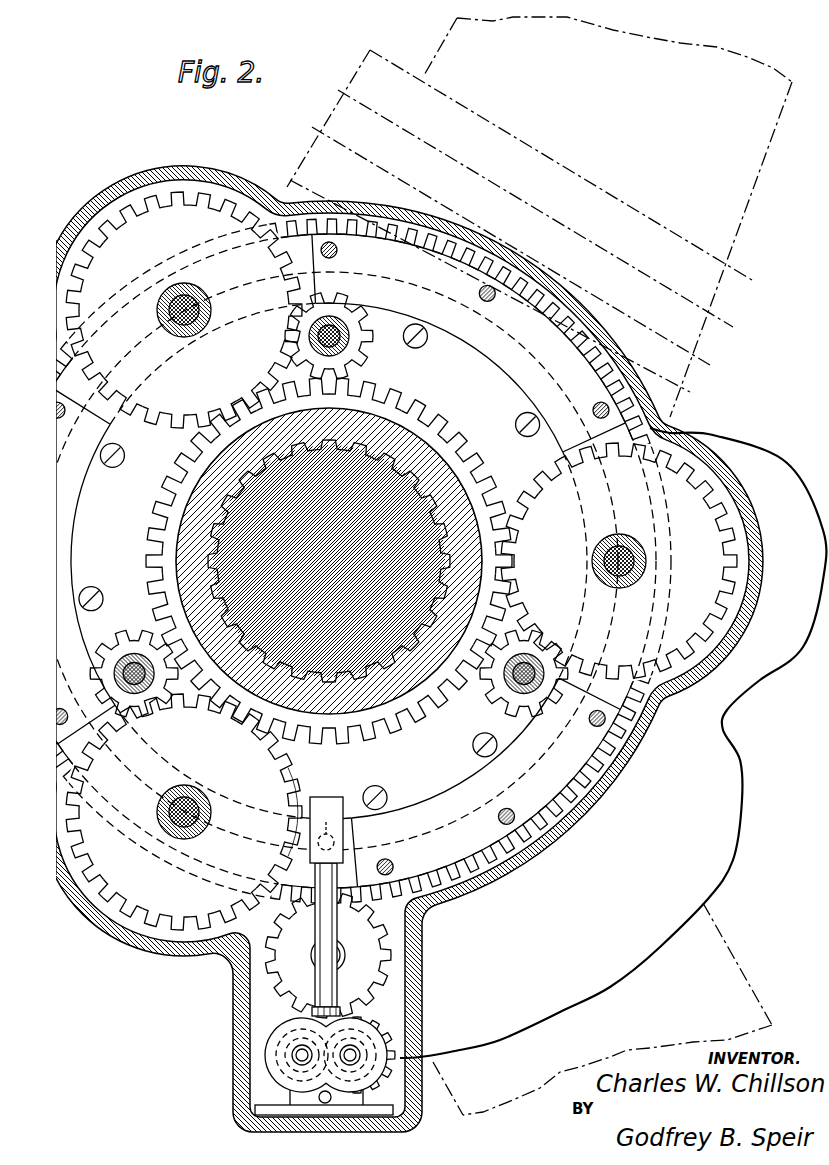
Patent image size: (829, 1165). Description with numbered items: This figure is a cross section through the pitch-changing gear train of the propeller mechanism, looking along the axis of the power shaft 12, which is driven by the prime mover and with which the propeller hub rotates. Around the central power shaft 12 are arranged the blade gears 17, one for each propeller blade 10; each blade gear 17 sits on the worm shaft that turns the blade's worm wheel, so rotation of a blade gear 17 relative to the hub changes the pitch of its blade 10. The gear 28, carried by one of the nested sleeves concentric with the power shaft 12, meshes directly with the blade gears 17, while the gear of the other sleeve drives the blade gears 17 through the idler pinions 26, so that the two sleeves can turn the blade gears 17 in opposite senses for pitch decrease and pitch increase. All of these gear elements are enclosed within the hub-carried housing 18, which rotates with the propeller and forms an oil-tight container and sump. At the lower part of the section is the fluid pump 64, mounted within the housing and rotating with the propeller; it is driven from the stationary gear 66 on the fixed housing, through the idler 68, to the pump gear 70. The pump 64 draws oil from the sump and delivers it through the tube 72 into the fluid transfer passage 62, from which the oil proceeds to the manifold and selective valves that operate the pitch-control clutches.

The propeller blade 10 is at (745, 160).
The power shaft 12 is at (328, 560).
The blade gear 17 is at (169, 426).
The hub-carried housing 18 is at (302, 848).
The idler pinion 26 is at (372, 346).
The gear 28 is at (171, 478).
The fluid transfer passage 62 is at (326, 830).
The fluid pump 64 is at (265, 1053).
The stationary gear 66 is at (458, 887).
The idler 68 is at (372, 955).
The pump gear 70 is at (393, 1045).
The tube 72 is at (318, 931).